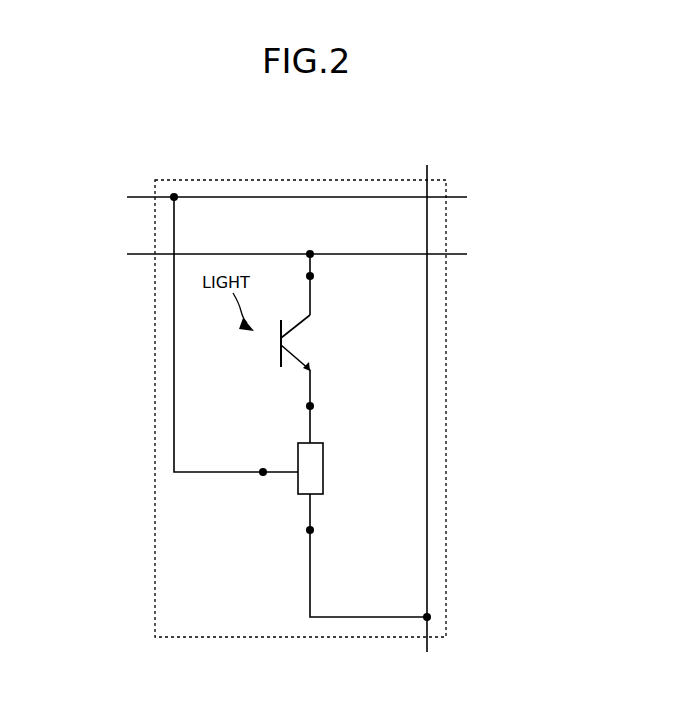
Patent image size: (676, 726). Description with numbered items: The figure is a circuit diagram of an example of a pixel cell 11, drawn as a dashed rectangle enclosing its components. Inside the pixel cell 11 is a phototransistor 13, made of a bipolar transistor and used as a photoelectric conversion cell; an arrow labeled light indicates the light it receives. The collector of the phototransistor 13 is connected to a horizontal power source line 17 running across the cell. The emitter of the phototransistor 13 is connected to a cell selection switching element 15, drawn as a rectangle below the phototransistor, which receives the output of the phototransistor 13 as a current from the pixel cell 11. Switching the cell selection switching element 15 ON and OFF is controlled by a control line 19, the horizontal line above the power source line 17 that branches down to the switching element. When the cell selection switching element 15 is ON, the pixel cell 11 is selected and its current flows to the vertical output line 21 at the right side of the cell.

The pixel cell 11 is at (348, 180).
The phototransistor 13 is at (298, 340).
The cell selection switching element 15 is at (325, 459).
The power source line 17 is at (253, 253).
The control line 19 is at (210, 196).
The output line 21 is at (428, 436).